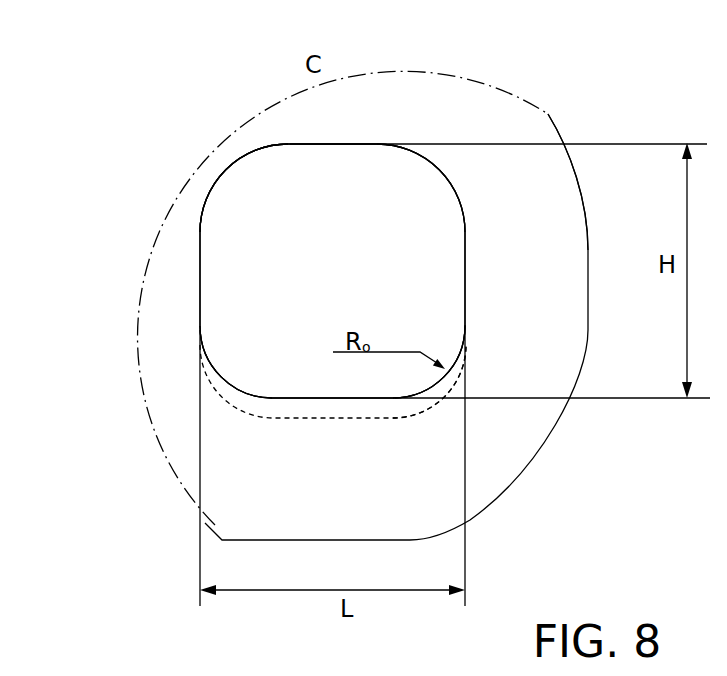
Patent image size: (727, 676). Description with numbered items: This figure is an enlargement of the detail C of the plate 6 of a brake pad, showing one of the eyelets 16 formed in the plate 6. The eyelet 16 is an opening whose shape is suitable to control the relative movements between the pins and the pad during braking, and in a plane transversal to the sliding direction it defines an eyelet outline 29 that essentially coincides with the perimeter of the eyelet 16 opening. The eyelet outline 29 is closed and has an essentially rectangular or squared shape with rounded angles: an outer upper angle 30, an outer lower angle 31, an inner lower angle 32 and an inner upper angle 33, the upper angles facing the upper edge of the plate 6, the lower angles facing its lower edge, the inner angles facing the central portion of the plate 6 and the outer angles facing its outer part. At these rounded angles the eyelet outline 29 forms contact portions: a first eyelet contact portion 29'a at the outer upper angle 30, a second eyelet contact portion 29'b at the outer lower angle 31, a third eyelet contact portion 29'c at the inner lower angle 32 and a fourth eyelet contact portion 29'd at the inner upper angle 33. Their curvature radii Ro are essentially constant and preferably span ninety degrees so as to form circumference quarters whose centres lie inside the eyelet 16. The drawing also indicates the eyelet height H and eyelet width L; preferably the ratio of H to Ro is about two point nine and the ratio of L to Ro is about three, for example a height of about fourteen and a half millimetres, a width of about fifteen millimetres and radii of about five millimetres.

The plate 6 is at (447, 180).
The eyelet 16 is at (427, 282).
The eyelet outline 29 is at (332, 201).
The first eyelet contact portion 29'a is at (474, 126).
The second eyelet contact portion 29'b is at (540, 397).
The third eyelet contact portion 29'c is at (151, 410).
The fourth eyelet contact portion 29'd is at (166, 170).
The outer upper angle 30 is at (527, 177).
The outer lower angle 31 is at (430, 383).
The inner lower angle 32 is at (247, 393).
The inner upper angle 33 is at (230, 167).